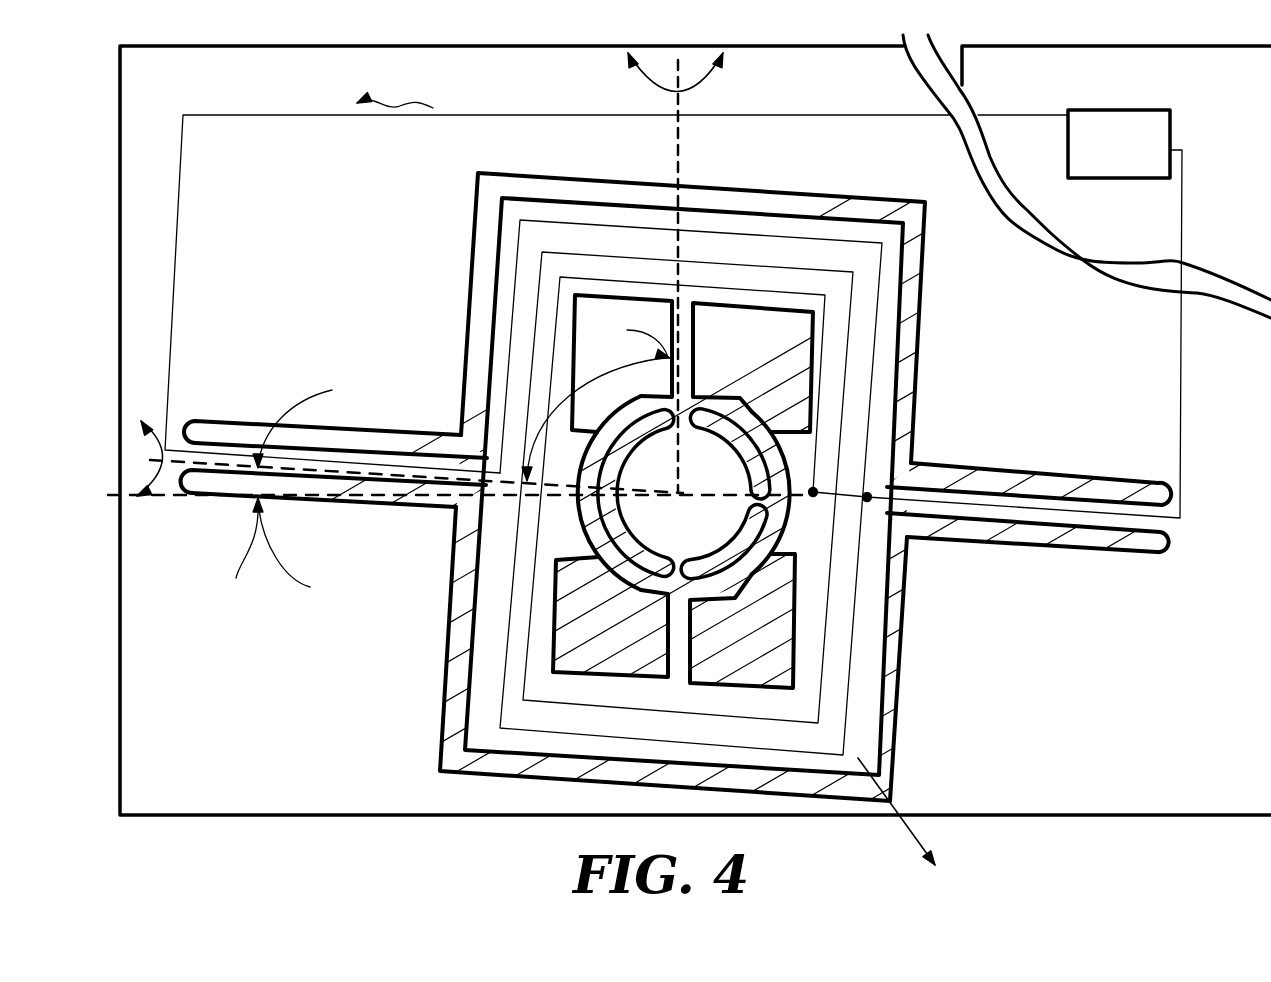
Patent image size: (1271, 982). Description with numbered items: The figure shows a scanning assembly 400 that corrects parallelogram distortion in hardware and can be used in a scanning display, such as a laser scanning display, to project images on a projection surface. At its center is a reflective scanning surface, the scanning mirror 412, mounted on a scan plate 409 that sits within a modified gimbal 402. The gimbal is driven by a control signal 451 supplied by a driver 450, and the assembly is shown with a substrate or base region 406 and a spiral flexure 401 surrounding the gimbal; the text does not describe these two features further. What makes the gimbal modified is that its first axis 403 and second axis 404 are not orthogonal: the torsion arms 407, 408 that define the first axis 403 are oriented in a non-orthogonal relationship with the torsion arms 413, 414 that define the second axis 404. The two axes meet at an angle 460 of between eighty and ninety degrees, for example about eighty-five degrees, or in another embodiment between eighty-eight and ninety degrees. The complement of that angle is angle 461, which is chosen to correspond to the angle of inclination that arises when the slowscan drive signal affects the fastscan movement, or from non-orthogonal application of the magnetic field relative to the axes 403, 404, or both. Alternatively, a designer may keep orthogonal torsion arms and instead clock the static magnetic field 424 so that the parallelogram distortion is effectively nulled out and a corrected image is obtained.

The scanning assembly 400 is at (293, 45).
The spiral flexure spring 401 is at (512, 335).
The modified gimbal 402 is at (497, 293).
The first axis 403 is at (213, 467).
The second axis 404 is at (682, 176).
The substrate 406 is at (318, 281).
The torsion arm 407 is at (310, 480).
The torsion arm 408 is at (993, 523).
The scan plate 409 is at (608, 555).
The scanning mirror 412 is at (712, 532).
The torsion arm 413 is at (690, 362).
The torsion arm 414 is at (680, 633).
The static magnetic field 424 is at (892, 803).
The driver 450 is at (1112, 148).
The control signal 451 is at (390, 118).
The angle 460 is at (462, 388).
The angle 461 is at (266, 549).